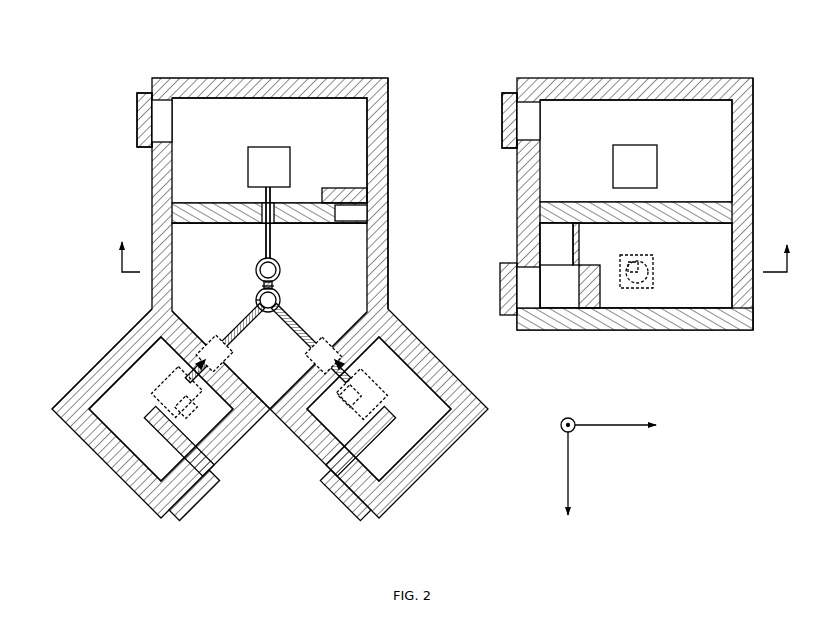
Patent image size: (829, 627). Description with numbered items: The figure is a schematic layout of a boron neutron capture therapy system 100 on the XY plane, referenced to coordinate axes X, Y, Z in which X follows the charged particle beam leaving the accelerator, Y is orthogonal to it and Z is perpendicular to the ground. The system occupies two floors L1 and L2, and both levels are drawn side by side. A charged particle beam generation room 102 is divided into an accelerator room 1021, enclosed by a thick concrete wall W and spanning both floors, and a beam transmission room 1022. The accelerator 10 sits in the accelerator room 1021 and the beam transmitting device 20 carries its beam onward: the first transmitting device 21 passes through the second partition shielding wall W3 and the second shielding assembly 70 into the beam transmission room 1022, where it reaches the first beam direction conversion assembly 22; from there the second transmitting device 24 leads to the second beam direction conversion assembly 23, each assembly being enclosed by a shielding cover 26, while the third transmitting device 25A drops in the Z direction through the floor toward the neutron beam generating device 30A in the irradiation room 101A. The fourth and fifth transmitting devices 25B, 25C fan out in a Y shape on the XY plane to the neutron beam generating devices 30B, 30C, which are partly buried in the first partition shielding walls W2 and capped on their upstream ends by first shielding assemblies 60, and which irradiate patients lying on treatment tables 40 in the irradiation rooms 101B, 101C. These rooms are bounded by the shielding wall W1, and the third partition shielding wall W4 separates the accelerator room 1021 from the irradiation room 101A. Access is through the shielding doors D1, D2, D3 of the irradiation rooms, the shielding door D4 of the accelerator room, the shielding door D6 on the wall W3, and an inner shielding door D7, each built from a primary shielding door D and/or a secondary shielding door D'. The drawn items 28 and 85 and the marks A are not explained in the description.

The boron neutron capture therapy system 100 is at (78, 57).
The concrete wall W is at (292, 78).
The shielding wall W1 is at (120, 352).
The first partition shielding wall W2 is at (292, 381).
The second partition shielding wall W3 is at (198, 205).
The third partition shielding wall W4 is at (562, 205).
The floor L1 is at (775, 135).
The floor L2 is at (418, 135).
The primary shielding door D is at (313, 204).
The secondary shielding door D' is at (381, 204).
The shielding door D1 is at (497, 278).
The shielding door D2 is at (196, 510).
The shielding door D3 is at (341, 510).
The shielding door D4 is at (132, 101).
The shielding door D6 is at (329, 188).
The shielding door D7 is at (540, 236).
The accelerator 10 is at (279, 174).
The beam transmitting device 20 is at (242, 260).
The first transmitting device 21 is at (271, 236).
The first beam direction conversion assembly 22 is at (279, 281).
The second beam direction conversion assembly 23 is at (257, 300).
The second transmitting device 24 is at (279, 292).
The third transmitting device 25A is at (652, 280).
The fourth transmitting device 25B is at (250, 325).
The fifth transmitting device 25C is at (304, 328).
The shielding cover 26 is at (281, 262).
The bushing 28 is at (259, 289).
The neutron beam generating device 30A is at (620, 257).
The neutron beam generating device 30B is at (172, 369).
The neutron beam generating device 30C is at (362, 373).
The treatment table 40 is at (186, 408).
The first shielding assembly 60 is at (212, 341).
The second shielding assembly 70 is at (262, 204).
The mounting block 85 is at (178, 441).
The irradiation room 101A is at (723, 256).
The irradiation room 101B is at (140, 418).
The irradiation room 101C is at (437, 418).
The charged particle beam generation room 102 is at (363, 148).
The accelerator room 1021 is at (360, 127).
The beam transmission room 1022 is at (360, 247).
The section line A- A is at (455, 256).
The X-axis direction X is at (567, 486).
The Y-axis direction Y is at (625, 425).
The Z-axis direction Z is at (562, 420).